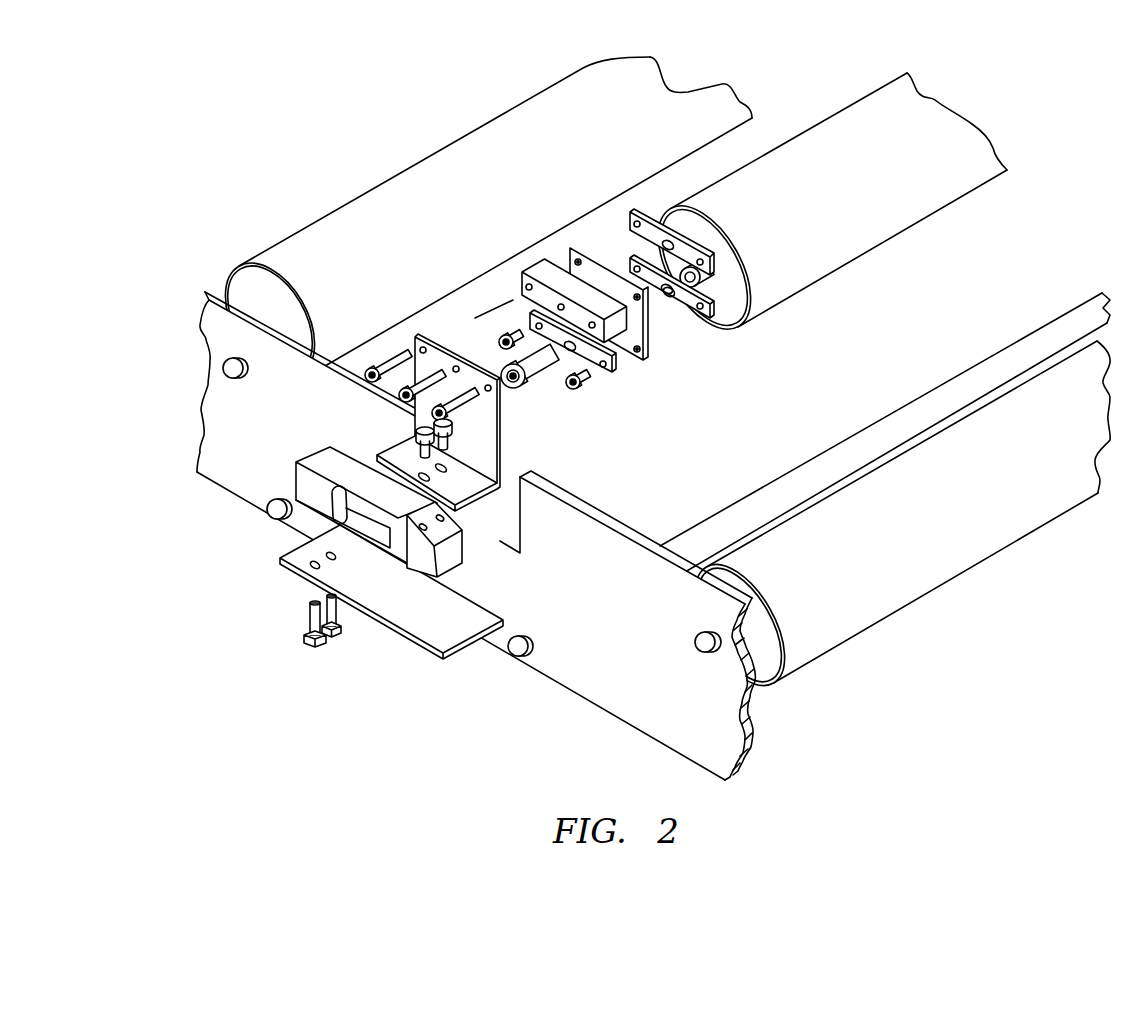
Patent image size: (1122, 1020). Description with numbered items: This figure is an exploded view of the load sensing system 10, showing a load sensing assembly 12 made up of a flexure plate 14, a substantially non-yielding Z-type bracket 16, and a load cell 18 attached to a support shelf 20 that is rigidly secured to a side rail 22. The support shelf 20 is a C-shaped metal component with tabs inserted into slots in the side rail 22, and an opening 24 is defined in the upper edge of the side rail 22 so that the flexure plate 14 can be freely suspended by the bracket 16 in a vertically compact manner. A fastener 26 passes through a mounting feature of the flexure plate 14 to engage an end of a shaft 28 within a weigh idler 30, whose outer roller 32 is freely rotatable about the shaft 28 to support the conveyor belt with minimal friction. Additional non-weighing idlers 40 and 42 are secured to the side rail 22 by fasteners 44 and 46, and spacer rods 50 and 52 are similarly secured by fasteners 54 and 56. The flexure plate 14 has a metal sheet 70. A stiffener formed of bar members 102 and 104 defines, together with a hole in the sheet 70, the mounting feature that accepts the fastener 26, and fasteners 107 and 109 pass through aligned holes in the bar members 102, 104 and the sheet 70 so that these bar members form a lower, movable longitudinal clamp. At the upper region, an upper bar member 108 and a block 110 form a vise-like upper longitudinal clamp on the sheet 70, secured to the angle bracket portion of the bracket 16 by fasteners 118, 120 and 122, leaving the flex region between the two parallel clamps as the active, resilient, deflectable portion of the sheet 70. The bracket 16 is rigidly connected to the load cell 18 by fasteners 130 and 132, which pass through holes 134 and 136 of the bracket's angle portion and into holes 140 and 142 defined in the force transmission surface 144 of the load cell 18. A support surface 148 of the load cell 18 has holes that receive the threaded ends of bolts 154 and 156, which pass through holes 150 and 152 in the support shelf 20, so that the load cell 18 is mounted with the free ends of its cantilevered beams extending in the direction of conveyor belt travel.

The system 10 is at (1043, 229).
The load sensing assembly 12 is at (236, 518).
The flexure plate 14 is at (657, 323).
The bracket 16 is at (501, 447).
The load cell 18 is at (282, 473).
The support shelf 20 is at (423, 660).
The side rail 22 is at (205, 405).
The opening 24 is at (508, 551).
The fastener 26 is at (527, 380).
The shaft 28 is at (722, 278).
The weigh idler 30 is at (1011, 123).
The outer roller 32 is at (924, 103).
The non-weighing idler 40 is at (242, 248).
The non-weighing idler 42 is at (889, 619).
The fastener 44 is at (226, 366).
The fastener 46 is at (700, 653).
The spacer rod 50 is at (660, 310).
The spacer rod 52 is at (999, 345).
The fastener 54 is at (268, 507).
The fastener 56 is at (516, 658).
The metal sheet 70 is at (602, 257).
The bar member 102 is at (705, 318).
The bar member 104 is at (609, 370).
The fastener 107 is at (508, 332).
The upper bar member 108 is at (687, 242).
The fastener 109 is at (592, 381).
The block 110 is at (548, 262).
The fastener 118 is at (457, 396).
The fastener 120 is at (417, 358).
The fastener 122 is at (393, 358).
The fastener 130 is at (400, 433).
The fastener 132 is at (450, 421).
The hole 134 is at (393, 460).
The hole 136 is at (493, 488).
The hole 140 is at (441, 531).
The hole 142 is at (442, 522).
The force transmission surface 144 is at (389, 548).
The support surface 148 is at (292, 532).
The hole 150 is at (290, 561).
The hole 152 is at (336, 561).
The bolt 154 is at (303, 622).
The bolt 156 is at (310, 596).